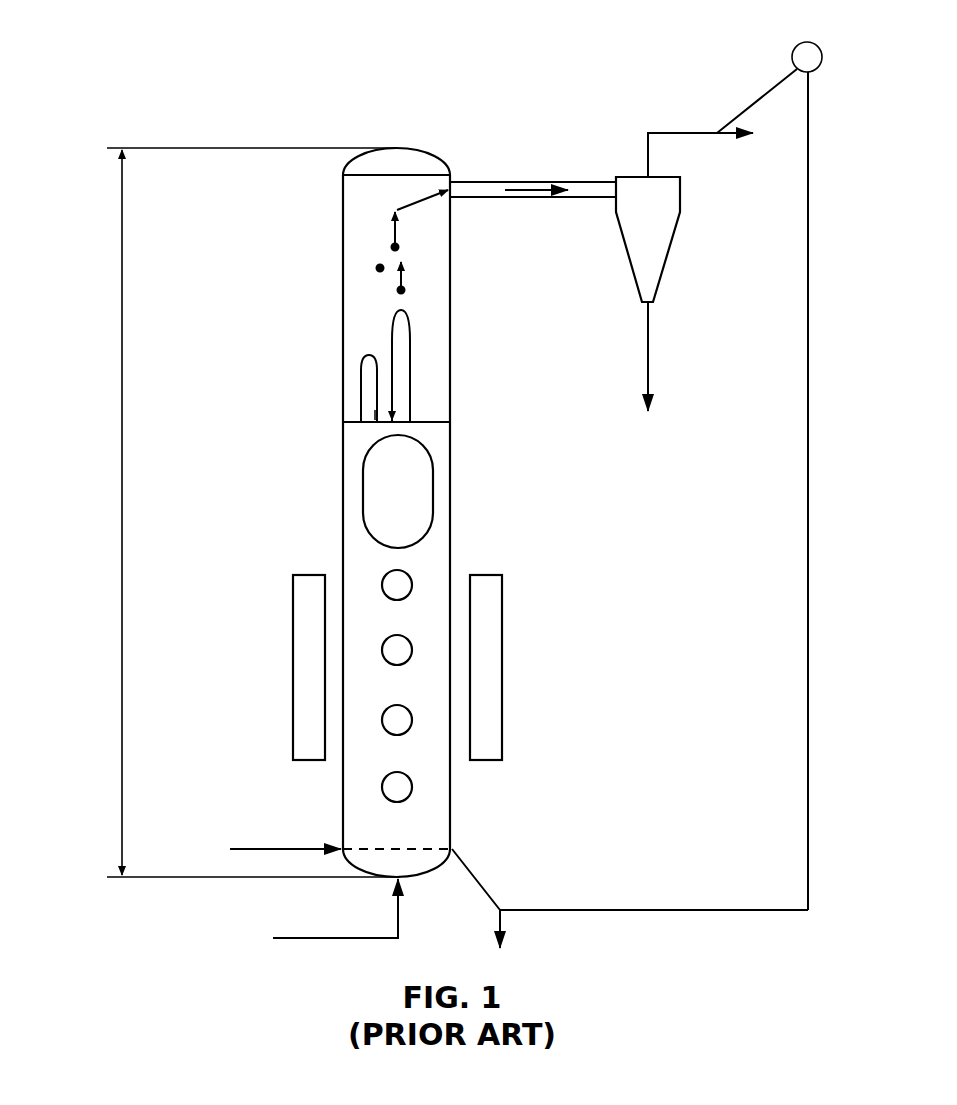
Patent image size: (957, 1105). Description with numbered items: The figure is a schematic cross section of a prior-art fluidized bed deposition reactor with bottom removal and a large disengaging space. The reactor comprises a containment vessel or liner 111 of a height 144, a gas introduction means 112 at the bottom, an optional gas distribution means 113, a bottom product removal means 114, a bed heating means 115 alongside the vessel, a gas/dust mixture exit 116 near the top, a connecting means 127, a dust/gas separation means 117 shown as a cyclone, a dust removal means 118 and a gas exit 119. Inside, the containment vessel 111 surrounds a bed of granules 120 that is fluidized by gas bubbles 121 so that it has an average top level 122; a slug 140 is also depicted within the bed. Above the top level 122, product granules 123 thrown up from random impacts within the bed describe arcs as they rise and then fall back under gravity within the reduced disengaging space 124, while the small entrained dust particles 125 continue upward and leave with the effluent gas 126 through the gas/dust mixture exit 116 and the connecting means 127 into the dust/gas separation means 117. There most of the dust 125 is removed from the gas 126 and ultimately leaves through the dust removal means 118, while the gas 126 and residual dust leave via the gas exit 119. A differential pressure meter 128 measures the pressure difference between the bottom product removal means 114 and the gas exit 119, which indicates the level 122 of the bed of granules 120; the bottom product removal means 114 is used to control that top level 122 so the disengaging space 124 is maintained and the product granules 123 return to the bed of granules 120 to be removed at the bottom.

The containment vessel 111 is at (341, 513).
The gas introduction means 112 is at (326, 937).
The gas distribution means 113 is at (238, 847).
The bottom product removal means 114 is at (484, 887).
The bed heating means 115 is at (512, 647).
The gas/dust mixture exit 116 is at (454, 183).
The dust/gas separation means 117 is at (650, 238).
The dust removal means 118 is at (650, 365).
The gas exit 119 is at (663, 131).
The bed of granules 120 is at (428, 557).
The gas bubbles 121 is at (414, 582).
The top level 122 is at (341, 420).
The product granules 123 is at (411, 361).
The disengaging space 124 is at (364, 302).
The entrained dust particles 125 is at (404, 288).
The effluent gas 126 is at (527, 188).
The connecting means 127 is at (587, 181).
The differential pressure meter 128 is at (822, 51).
The slug 140 is at (412, 461).
The height 144 is at (88, 489).